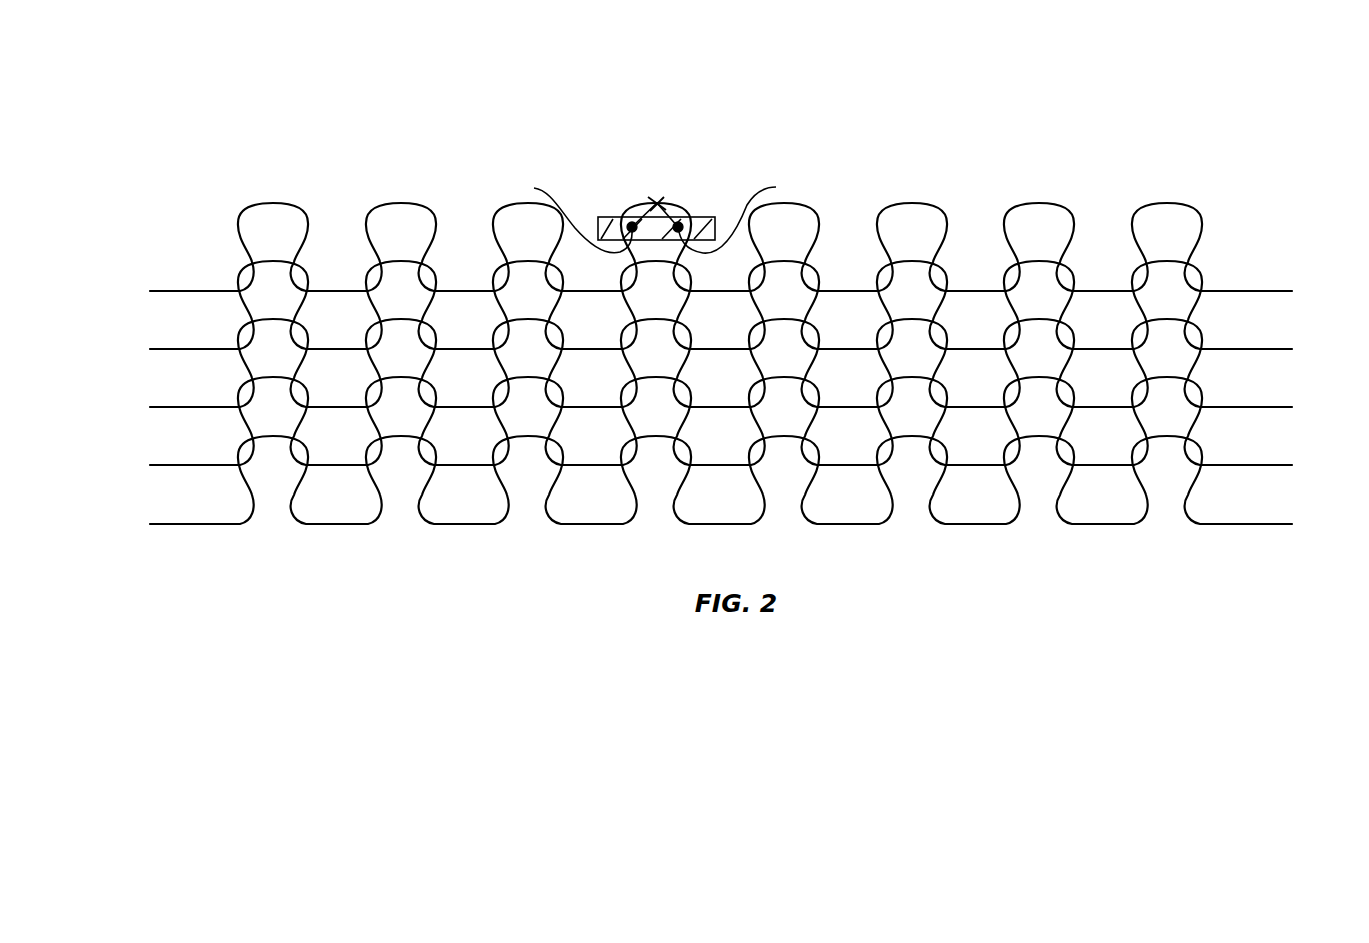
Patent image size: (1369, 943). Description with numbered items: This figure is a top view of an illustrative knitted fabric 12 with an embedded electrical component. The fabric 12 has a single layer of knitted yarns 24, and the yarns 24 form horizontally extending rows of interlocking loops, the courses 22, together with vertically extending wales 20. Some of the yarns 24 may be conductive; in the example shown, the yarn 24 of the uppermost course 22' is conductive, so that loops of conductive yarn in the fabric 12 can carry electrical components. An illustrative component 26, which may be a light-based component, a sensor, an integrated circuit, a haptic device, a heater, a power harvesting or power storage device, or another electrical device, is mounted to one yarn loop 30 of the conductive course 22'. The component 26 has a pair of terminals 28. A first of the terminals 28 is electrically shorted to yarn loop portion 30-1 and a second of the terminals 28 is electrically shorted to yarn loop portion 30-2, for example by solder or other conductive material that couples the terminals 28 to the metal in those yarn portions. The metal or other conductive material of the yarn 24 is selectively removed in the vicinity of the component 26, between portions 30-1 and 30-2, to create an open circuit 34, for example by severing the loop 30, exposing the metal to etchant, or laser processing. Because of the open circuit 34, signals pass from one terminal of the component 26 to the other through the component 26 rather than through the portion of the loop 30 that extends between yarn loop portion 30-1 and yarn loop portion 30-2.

The knitted fabric 12 is at (1275, 78).
The wale 20 is at (1040, 190).
The course 22 is at (725, 392).
The course 22' is at (727, 215).
The yarn 24 is at (238, 223).
The component 26 is at (701, 216).
The terminals 28 is at (631, 221).
The yarn loop 30 is at (651, 178).
The yarn loop portion 30-1 is at (534, 188).
The yarn loop portion 30-2 is at (776, 187).
The open circuit 34 is at (653, 196).